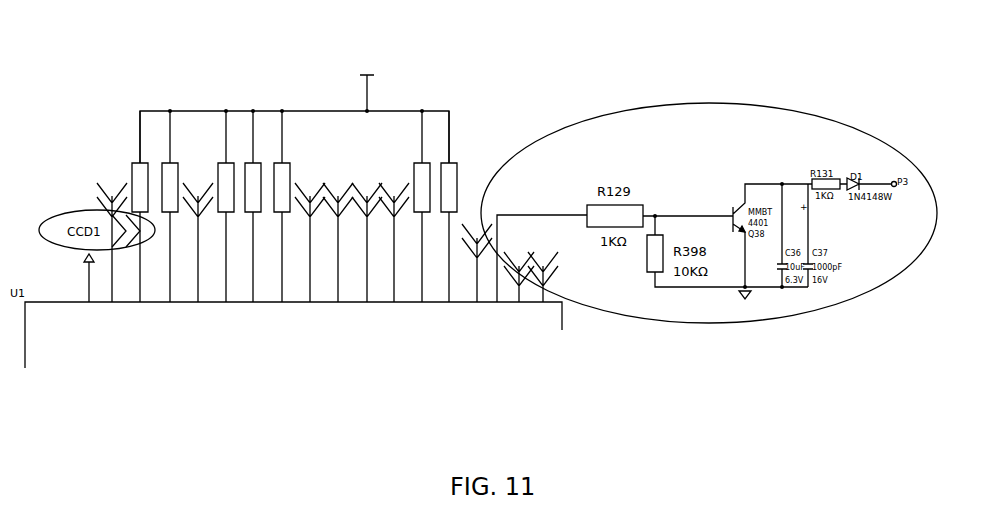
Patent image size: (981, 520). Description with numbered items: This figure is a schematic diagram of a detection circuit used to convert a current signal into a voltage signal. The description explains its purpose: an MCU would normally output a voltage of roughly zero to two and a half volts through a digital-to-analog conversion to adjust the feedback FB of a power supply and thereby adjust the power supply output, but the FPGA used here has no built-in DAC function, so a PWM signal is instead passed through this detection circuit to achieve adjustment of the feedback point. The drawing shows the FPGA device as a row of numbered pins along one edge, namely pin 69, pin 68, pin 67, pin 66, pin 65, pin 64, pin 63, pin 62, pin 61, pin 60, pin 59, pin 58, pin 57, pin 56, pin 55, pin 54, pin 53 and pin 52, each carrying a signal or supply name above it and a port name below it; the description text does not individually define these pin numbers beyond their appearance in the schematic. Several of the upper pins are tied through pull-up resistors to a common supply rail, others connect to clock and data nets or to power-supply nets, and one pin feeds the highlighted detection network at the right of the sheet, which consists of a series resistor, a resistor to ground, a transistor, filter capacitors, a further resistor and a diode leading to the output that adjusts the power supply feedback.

The GAD pin 69 is at (82, 305).
The CINT_3 pin 68 is at (106, 221).
The IO47_3 pin 67 is at (136, 226).
The IO46_3 pin 66 is at (166, 226).
The CCIO_3 pin 65 is at (192, 224).
The IO45_3 pin 64 is at (222, 226).
The IO44_3 pin 63 is at (249, 226).
The IO43_3 pin 62 is at (278, 226).
The IO42_3 pin 61 is at (304, 246).
The IO41_3 pin 60 is at (332, 255).
The IO40_3 pin 59 is at (361, 230).
The IO39_3 pin 58 is at (388, 255).
The CLK7_3 pin 57 is at (418, 224).
The CLK6_3 pin 56 is at (446, 224).
The CCIO_3 pin 55 is at (471, 243).
The CLK5_3 pin 54 is at (529, 302).
The CLK4_3 pin 53 is at (513, 281).
The IO34_3 pin 52 is at (537, 285).